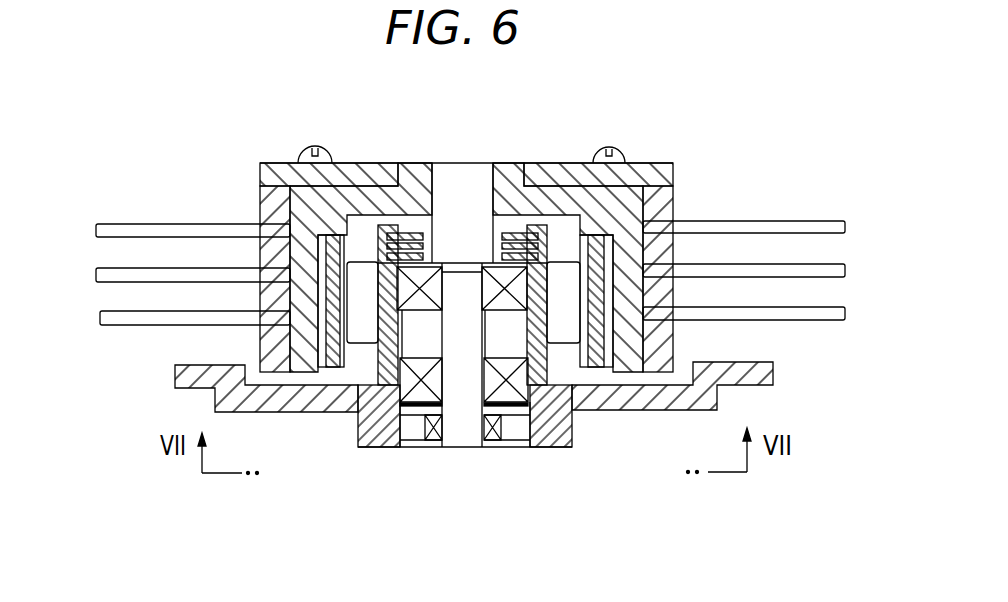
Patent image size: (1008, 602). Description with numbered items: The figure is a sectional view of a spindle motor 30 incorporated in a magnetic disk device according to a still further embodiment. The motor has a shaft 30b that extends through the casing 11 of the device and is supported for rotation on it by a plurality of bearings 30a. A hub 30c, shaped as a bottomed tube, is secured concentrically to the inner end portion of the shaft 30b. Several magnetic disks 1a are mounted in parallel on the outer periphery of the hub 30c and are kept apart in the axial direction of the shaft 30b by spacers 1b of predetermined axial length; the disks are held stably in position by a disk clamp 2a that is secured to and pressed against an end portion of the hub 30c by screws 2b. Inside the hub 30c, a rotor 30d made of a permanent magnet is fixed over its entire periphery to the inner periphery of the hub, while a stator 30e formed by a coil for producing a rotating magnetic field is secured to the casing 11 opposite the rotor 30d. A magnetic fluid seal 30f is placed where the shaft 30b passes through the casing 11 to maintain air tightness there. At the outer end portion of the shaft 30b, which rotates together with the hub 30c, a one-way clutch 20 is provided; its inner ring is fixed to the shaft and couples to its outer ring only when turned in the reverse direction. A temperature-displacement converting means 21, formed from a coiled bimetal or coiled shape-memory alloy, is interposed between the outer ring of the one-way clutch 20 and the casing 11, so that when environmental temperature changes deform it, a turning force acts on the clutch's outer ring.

The magnetic disks 1a is at (787, 220).
The spacers 1b is at (681, 276).
The disk clamp 2a is at (668, 160).
The screws 2b is at (620, 148).
The casing 11 is at (773, 365).
The one-way clutch 20 is at (433, 443).
The temperature-displacement converting means 21 is at (515, 432).
The spindle motor 30 is at (814, 99).
The bearings 30a is at (367, 332).
The shaft 30b is at (467, 177).
The hub 30c is at (297, 210).
The rotor 30d is at (352, 250).
The stator 30e is at (573, 335).
The magnetic fluid seal 30f is at (512, 178).